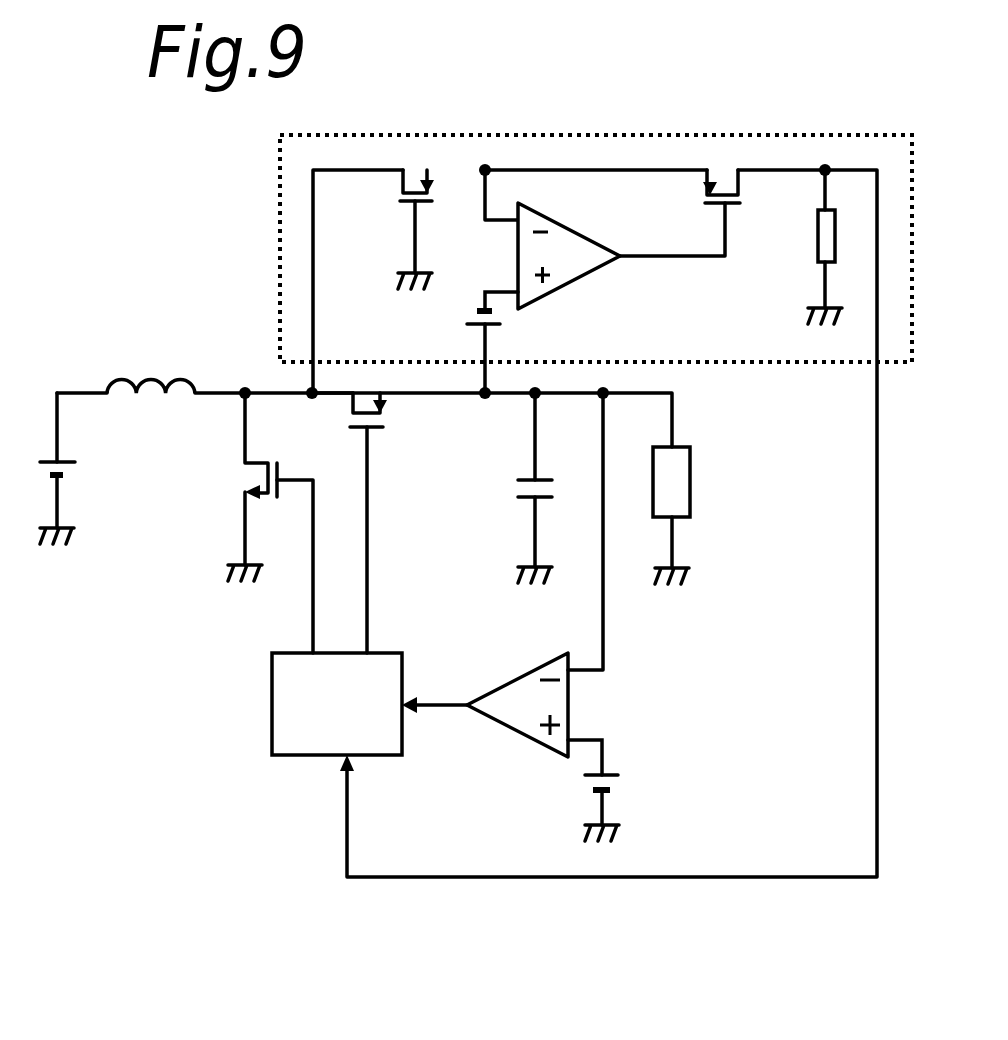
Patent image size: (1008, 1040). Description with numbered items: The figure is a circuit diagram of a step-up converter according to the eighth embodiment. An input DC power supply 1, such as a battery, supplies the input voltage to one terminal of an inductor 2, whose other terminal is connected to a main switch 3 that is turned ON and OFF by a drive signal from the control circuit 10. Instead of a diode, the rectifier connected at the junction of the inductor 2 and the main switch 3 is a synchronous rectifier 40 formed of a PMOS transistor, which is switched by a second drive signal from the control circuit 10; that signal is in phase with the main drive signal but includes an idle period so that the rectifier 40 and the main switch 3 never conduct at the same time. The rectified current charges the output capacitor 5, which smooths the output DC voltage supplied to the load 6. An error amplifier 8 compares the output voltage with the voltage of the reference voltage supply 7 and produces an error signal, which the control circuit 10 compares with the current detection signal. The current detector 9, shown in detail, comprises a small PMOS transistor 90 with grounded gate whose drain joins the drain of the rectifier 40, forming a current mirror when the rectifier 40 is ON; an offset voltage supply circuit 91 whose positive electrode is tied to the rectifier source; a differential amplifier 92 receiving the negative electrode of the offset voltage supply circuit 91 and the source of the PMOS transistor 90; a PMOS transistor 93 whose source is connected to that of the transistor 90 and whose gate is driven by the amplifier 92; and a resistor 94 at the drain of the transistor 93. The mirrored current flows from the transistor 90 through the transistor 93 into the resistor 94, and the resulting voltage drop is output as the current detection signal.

The input DC power supply 1 is at (60, 478).
The inductor 2 is at (168, 378).
The main switch 3 is at (237, 480).
The synchronous rectifier 40 is at (387, 437).
The output capacitor 5 is at (518, 488).
The load 6 is at (687, 518).
The reference voltage supply 7 is at (625, 783).
The error amplifier 8 is at (540, 748).
The current detector 9 is at (697, 362).
The control circuit 10 is at (272, 693).
The PMOS transistor 90 is at (408, 208).
The offset voltage supply circuit 91 is at (462, 313).
The differential amplifier 92 is at (590, 277).
The PMOS transistor 93 is at (707, 188).
The resistor 94 is at (812, 225).